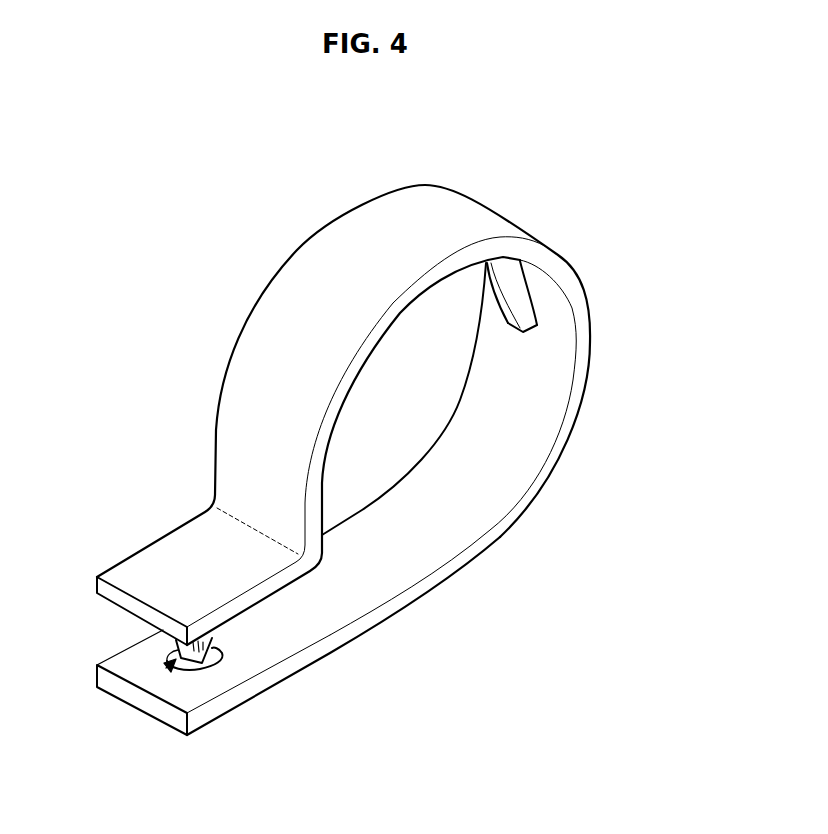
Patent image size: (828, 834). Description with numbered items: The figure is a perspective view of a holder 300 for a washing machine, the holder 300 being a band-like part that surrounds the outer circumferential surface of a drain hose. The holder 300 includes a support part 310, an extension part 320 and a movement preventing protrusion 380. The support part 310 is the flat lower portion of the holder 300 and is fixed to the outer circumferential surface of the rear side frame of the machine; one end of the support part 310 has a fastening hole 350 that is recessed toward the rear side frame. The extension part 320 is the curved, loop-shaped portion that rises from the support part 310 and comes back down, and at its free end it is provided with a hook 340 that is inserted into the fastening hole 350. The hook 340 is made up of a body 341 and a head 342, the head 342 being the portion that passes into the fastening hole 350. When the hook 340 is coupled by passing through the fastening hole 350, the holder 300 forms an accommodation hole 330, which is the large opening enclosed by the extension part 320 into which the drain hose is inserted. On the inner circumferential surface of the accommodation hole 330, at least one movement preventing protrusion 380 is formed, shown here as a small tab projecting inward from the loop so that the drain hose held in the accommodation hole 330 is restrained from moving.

The holder 300 is at (652, 156).
The support part 310 is at (352, 595).
The extension part 320 is at (312, 271).
The accommodation hole 330 is at (416, 391).
The hook 340 is at (166, 668).
The body 341 is at (200, 642).
The head 342 is at (214, 653).
The fastening hole 350 is at (222, 666).
The movement preventing protrusion 380 is at (524, 303).